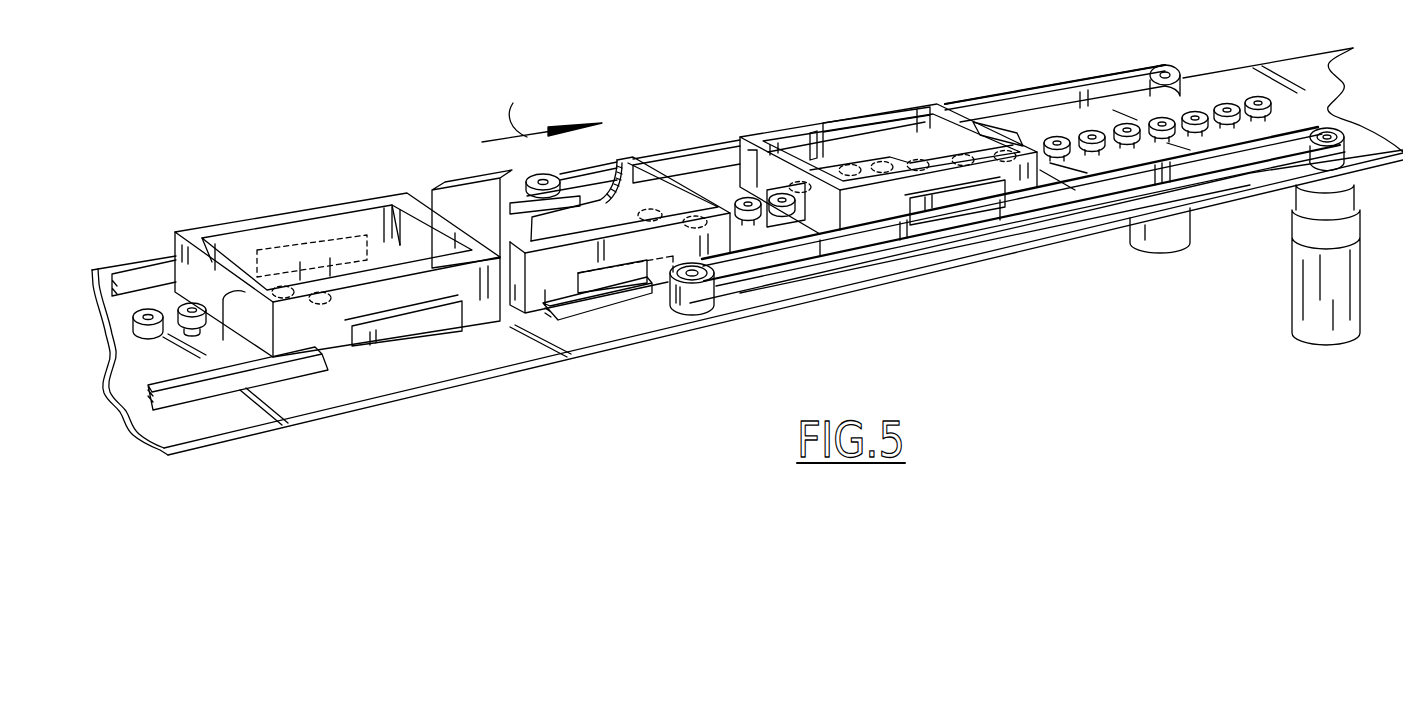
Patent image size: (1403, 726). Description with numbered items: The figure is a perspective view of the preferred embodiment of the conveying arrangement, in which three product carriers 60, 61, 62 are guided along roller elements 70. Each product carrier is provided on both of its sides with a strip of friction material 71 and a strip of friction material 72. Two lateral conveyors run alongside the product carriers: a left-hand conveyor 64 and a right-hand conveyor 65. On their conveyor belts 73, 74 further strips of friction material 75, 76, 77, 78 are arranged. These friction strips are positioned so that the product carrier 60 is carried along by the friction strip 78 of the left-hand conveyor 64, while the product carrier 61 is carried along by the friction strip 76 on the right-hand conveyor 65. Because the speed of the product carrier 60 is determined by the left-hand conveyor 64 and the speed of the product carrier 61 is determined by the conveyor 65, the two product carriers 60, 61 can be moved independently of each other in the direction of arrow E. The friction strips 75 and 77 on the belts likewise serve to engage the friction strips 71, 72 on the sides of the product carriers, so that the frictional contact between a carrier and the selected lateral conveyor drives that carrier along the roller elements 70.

The product carrier 60 is at (942, 108).
The product carrier 61 is at (620, 158).
The product carrier 62 is at (323, 208).
The left-hand conveyor 64 is at (1071, 74).
The right-hand conveyor 65 is at (1094, 240).
The roller elements 70 is at (182, 303).
The strip of friction material 71 is at (397, 333).
The strip of friction material 72 is at (803, 148).
The conveyor belt 73 is at (1053, 220).
The conveyor belt 74 is at (1007, 93).
The strip of friction material 75 is at (1362, 162).
The strip of friction material 76 is at (702, 307).
The strip of friction material 77 is at (863, 112).
The strip of friction material 78 is at (800, 150).